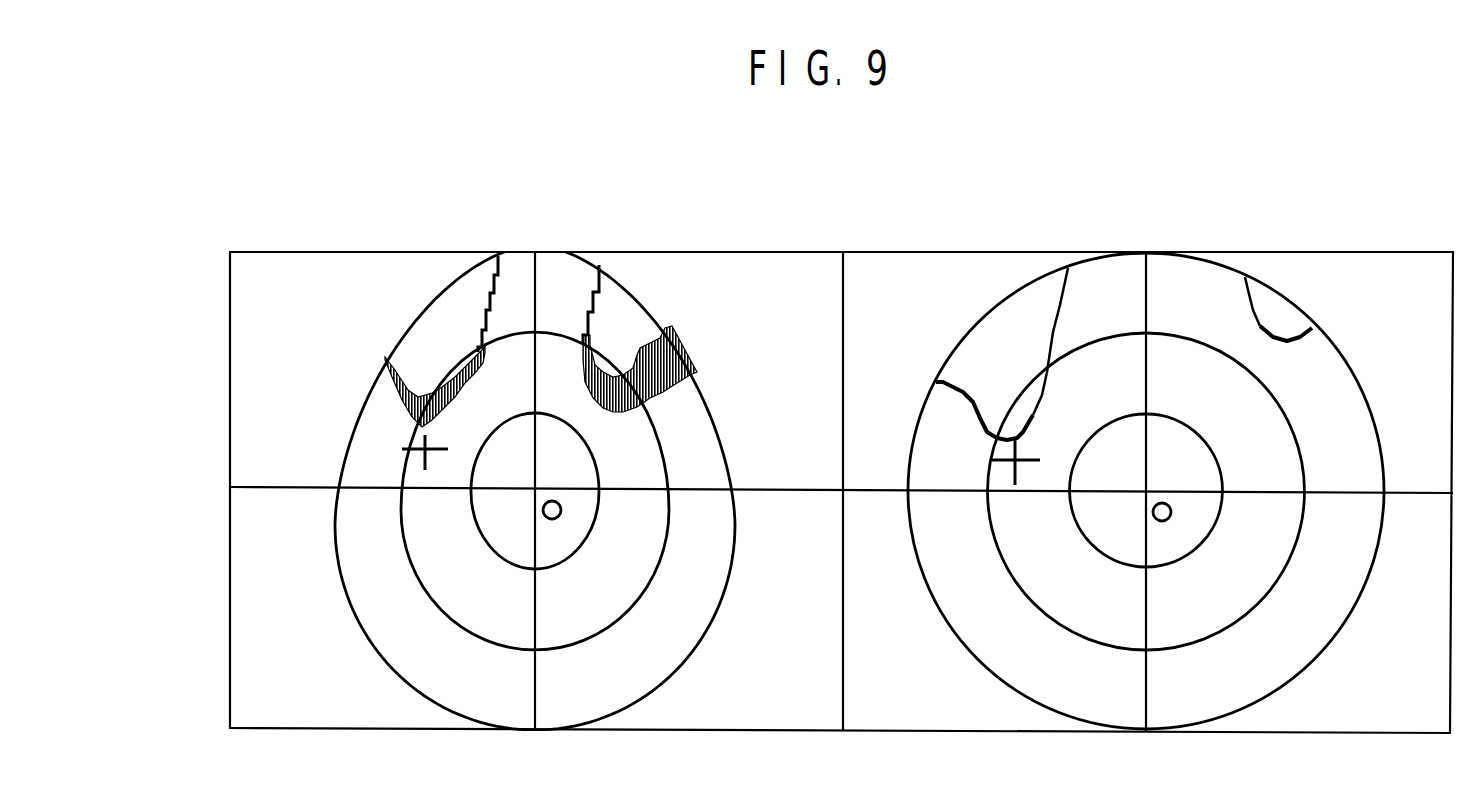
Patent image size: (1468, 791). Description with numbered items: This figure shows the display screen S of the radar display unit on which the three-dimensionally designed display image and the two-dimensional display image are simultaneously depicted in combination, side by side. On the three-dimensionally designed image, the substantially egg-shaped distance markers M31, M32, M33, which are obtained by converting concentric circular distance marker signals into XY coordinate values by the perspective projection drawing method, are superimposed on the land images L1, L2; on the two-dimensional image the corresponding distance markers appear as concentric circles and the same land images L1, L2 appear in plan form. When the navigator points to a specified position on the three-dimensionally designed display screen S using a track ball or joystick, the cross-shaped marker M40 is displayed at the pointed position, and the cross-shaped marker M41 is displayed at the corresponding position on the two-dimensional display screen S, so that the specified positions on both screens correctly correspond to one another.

The display screen S is at (783, 290).
The land image L1 is at (483, 350).
The land image L2 is at (586, 338).
The substantially egg-shaped distance marker M31 is at (586, 541).
The substantially egg-shaped distance marker M32 is at (624, 611).
The substantially egg-shaped distance marker M33 is at (673, 667).
The cross-shaped marker M40 is at (422, 440).
The cross-shaped marker M41 is at (1008, 470).